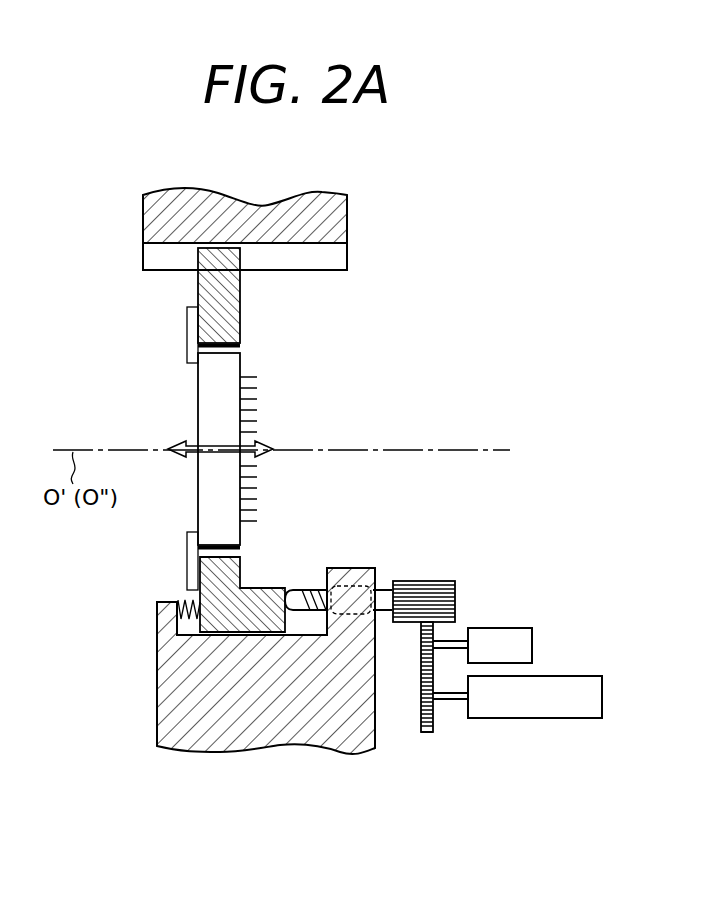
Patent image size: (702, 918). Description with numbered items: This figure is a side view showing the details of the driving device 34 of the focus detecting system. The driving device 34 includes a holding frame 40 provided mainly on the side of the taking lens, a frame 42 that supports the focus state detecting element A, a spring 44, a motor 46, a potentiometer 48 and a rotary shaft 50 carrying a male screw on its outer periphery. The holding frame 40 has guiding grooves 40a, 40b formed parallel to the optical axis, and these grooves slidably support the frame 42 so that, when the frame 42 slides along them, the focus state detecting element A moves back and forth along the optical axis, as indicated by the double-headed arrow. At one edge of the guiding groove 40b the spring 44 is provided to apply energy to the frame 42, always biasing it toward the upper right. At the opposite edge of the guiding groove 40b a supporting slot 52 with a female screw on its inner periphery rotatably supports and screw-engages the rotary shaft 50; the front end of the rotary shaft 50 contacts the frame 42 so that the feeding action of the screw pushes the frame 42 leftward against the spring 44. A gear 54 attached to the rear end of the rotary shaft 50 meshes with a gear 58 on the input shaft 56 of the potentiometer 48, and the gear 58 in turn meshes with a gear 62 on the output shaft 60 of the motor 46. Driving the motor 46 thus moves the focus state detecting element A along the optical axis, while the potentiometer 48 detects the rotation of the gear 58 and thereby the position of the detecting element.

The driving device 34 is at (420, 401).
The holding frame 40 is at (334, 221).
The guiding groove 40a is at (325, 258).
The guiding groove 40b is at (298, 633).
The frame 42 is at (213, 263).
The focus state detecting element A is at (233, 362).
The spring 44 is at (190, 604).
The motor 46 is at (566, 720).
The potentiometer 48 is at (527, 642).
The rotary shaft 50 is at (312, 590).
The supporting slot 52 is at (349, 566).
The gear 54 is at (428, 580).
The input shaft 56 is at (459, 640).
The gear 58 is at (421, 676).
The output shaft 60 is at (456, 701).
The gear 62 is at (431, 734).